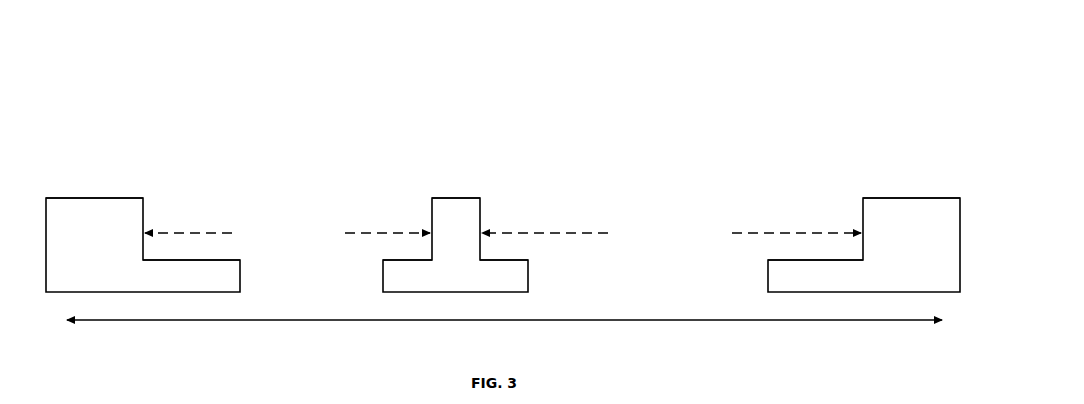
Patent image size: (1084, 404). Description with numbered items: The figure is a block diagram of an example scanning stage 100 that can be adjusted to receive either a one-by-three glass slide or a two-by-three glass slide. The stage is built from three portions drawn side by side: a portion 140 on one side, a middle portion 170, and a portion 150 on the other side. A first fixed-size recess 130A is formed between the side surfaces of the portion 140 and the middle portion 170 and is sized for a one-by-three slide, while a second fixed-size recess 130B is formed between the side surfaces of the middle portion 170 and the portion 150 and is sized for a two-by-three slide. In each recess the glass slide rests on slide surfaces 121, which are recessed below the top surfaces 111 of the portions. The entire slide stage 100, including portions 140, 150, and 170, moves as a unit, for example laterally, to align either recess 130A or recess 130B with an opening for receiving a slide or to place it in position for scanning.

The scanning stage 100 is at (208, 106).
The top surfaces 111 is at (910, 194).
The slide surfaces 121 is at (803, 256).
The first fixed-size recess 130A is at (287, 234).
The second fixed-size recess 130B is at (671, 234).
The portion 140 is at (143, 245).
The portion 150 is at (864, 245).
The middle portion 170 is at (455, 245).